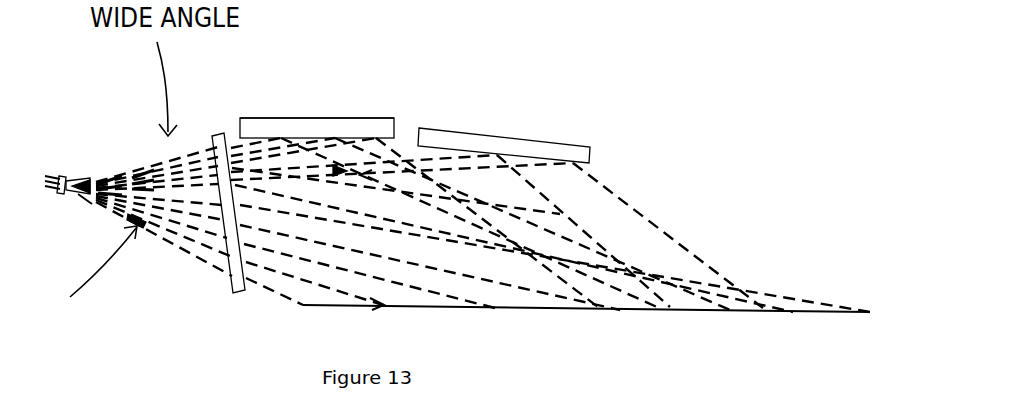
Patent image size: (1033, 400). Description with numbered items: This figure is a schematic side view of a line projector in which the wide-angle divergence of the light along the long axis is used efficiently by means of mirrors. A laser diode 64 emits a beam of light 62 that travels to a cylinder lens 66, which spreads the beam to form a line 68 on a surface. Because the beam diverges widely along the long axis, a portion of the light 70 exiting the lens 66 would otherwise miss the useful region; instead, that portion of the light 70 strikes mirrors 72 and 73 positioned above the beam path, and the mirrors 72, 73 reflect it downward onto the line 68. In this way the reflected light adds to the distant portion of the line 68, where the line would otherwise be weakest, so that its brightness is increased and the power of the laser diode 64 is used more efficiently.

The beam of light 62 is at (197, 260).
The laser diode 64 is at (58, 177).
The cylinder lens 66 is at (208, 146).
The line 68 is at (543, 309).
The portion of the light 70 is at (253, 150).
The mirror 72 is at (350, 118).
The mirror 73 is at (490, 133).